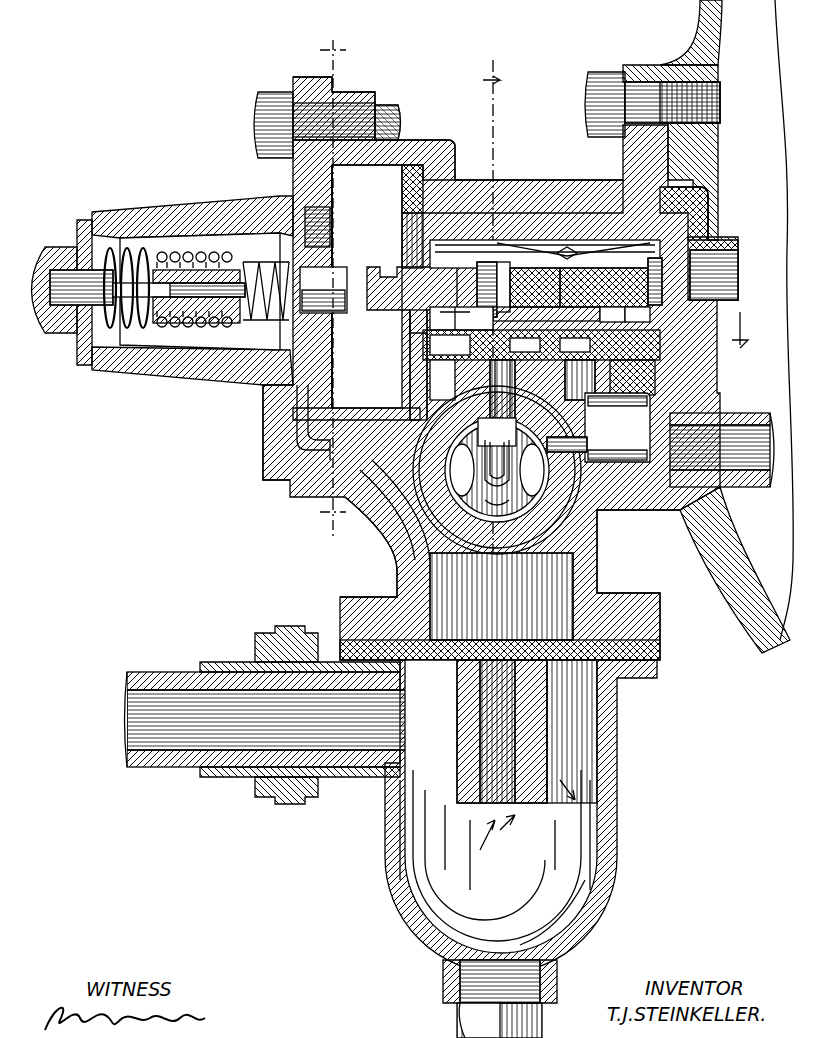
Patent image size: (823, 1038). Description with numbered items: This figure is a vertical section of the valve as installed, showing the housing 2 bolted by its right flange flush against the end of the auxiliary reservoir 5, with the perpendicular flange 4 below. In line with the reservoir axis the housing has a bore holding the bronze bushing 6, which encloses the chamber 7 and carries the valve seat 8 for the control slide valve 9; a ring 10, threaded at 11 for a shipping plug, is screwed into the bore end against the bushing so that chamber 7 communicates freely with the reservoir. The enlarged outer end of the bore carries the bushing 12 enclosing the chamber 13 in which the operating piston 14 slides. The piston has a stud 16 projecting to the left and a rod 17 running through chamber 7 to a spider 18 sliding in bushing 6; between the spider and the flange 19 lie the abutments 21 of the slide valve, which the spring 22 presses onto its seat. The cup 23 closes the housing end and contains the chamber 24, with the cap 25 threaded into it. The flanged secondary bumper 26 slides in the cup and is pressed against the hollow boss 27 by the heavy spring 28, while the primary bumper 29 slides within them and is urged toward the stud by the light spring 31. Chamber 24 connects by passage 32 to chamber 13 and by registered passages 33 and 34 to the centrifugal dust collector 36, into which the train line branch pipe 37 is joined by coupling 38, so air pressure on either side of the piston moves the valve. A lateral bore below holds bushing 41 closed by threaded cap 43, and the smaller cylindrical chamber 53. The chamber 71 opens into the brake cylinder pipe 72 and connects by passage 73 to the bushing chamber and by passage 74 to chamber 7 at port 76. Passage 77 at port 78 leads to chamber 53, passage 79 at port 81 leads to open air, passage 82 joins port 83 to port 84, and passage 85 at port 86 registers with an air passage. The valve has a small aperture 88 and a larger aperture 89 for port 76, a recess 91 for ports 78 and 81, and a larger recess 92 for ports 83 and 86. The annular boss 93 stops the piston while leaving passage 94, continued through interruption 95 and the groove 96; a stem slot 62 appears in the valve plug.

The housing 2 is at (554, 188).
The flange 4 is at (650, 608).
The auxiliary reservoir 5 is at (730, 10).
The bronze bushing 6 is at (333, 287).
The chamber 7 is at (468, 265).
The valve seat 8 is at (420, 335).
The control slide valve 9 is at (503, 287).
The ring 10 is at (700, 203).
The thread 11 is at (736, 268).
The bushing 12 is at (349, 167).
The chamber 13 is at (376, 242).
The operating piston 14 is at (410, 392).
The stud 16 is at (383, 260).
The shaft or rod 17 is at (603, 296).
The spider 18 is at (659, 281).
The flange 19 is at (485, 285).
The abutments 21 is at (634, 260).
The spring 22 is at (545, 255).
The cup 23 is at (197, 195).
The chamber 24 is at (148, 242).
The cap 25 is at (58, 252).
The flanged secondary bumper 26 is at (83, 310).
The hollow boss 27 is at (274, 325).
The heavy spring 28 is at (163, 323).
The primary bumper 29 is at (325, 289).
The light spring 31 is at (253, 317).
The passage 32 is at (315, 230).
The passage 33 is at (296, 418).
The passage 34 is at (400, 550).
The centrifugal dust collector 36 is at (605, 721).
The train line branch pipe 37 is at (174, 675).
The coupling 38 is at (297, 640).
The bushing 41 is at (553, 508).
The threaded cap 43 is at (535, 480).
The cylindrical chamber 53 is at (494, 512).
The valve stem slot 62 is at (498, 452).
The chamber 71 is at (636, 446).
The brake cylinder pipe 72 is at (735, 416).
The passage 73 is at (583, 460).
The passage 74 is at (632, 377).
The port 76 is at (541, 345).
The passage 77 is at (443, 380).
The port 78 is at (450, 346).
The passage 79 is at (515, 390).
The port 81 is at (473, 321).
The passage 82 is at (490, 396).
The port 83 is at (532, 349).
The port 84 is at (484, 390).
The passage 85 is at (578, 380).
The port 86 is at (577, 347).
The small aperture 88 is at (614, 319).
The larger aperture 89 is at (637, 319).
The recess 91 is at (546, 318).
The larger recess 92 is at (535, 287).
The annular boss 93 is at (425, 358).
The passage 94 is at (428, 176).
The interruption 95 is at (420, 224).
The groove 96 is at (407, 170).